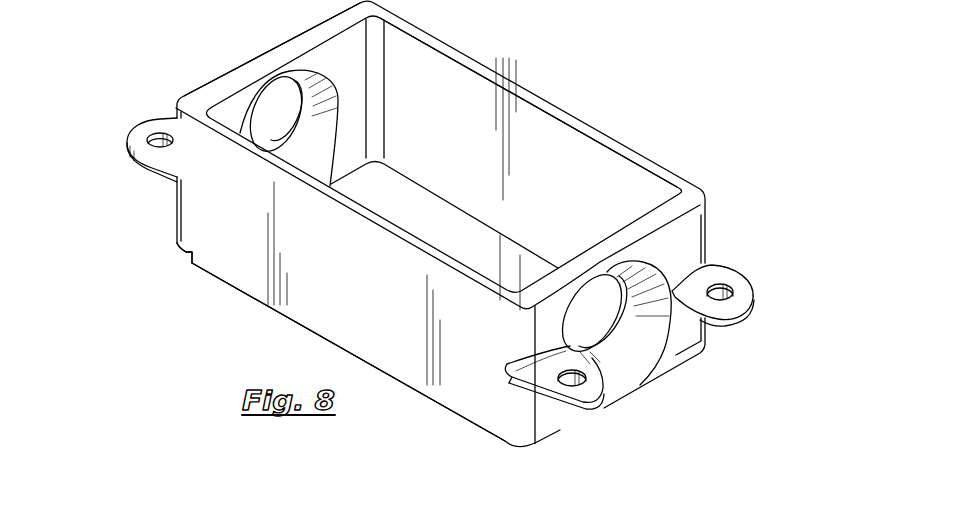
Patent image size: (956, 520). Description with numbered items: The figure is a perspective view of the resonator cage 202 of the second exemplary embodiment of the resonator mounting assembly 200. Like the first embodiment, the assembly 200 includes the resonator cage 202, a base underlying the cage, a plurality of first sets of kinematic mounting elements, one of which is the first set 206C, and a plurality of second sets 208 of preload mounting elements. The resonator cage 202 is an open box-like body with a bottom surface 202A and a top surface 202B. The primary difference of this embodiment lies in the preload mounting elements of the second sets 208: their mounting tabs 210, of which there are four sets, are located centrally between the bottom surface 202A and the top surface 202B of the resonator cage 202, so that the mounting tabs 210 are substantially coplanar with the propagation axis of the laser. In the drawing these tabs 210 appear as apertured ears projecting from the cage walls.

The resonator mounting assembly 200 is at (483, 57).
The resonator cage 202 is at (566, 108).
The bottom surface 202A is at (323, 317).
The top surface 202B is at (679, 194).
The first set of kinematic mounting elements 206C is at (178, 250).
The second set of preload mounting elements 208 is at (757, 301).
The mounting tab 210 is at (731, 313).